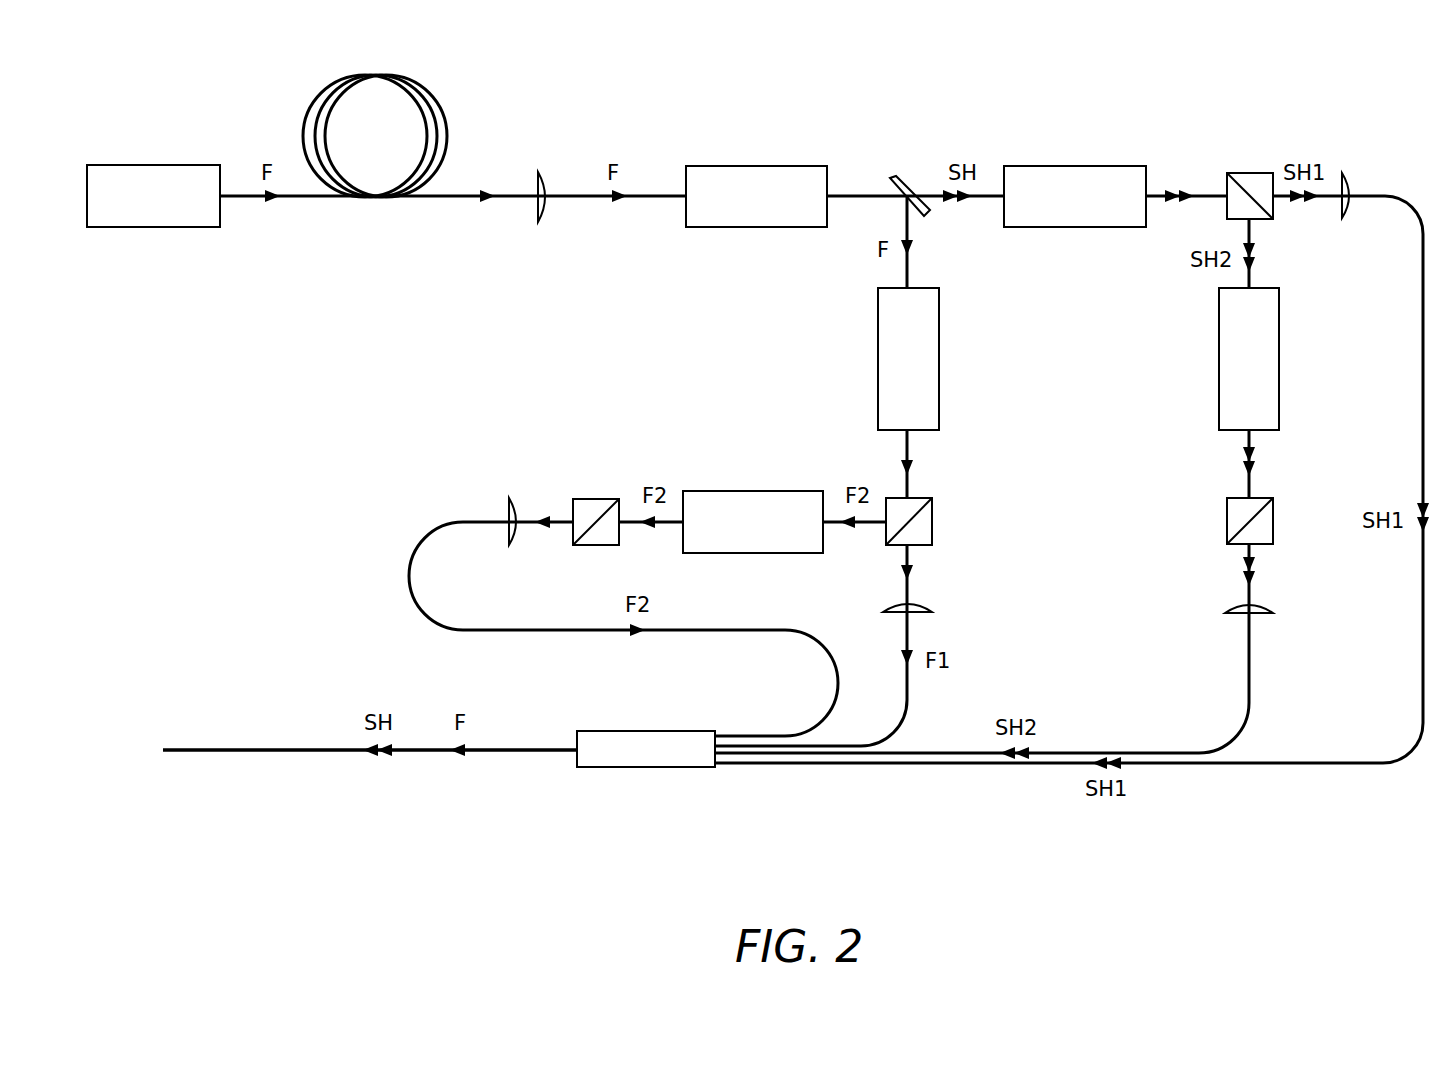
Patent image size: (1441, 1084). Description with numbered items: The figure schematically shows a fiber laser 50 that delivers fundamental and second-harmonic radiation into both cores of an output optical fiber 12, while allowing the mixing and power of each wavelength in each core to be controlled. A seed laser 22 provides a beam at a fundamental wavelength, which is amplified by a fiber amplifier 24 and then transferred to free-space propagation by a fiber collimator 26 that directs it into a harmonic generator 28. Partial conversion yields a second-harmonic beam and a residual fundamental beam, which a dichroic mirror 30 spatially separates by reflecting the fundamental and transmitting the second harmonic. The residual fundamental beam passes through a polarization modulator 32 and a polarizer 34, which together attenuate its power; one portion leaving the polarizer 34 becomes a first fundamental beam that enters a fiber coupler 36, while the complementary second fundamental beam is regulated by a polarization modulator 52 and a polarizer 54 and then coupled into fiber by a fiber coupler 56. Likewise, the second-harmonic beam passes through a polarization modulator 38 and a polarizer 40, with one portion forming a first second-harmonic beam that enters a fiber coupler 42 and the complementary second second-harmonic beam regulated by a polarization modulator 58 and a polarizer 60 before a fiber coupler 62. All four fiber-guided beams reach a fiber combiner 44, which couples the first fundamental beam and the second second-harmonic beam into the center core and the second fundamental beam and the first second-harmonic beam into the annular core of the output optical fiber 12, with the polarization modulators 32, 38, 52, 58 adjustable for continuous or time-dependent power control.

The output optical fiber 12 is at (287, 758).
The seed laser 22 is at (119, 165).
The fiber amplifier 24 is at (437, 100).
The fiber collimator 26 is at (540, 174).
The harmonic generator 28 is at (700, 168).
The dichroic mirror 30 is at (894, 172).
The polarization modulator 32 is at (938, 316).
The polarizer 34 is at (934, 531).
The fiber coupler 36 is at (935, 610).
The polarization modulator 38 is at (1128, 170).
The polarizer 40 is at (1259, 175).
The fiber coupler 42 is at (1343, 172).
The fiber combiner 44 is at (681, 760).
The fiber laser 50 is at (210, 532).
The polarization modulator 52 is at (710, 490).
The polarizer 54 is at (590, 500).
The fiber coupler 56 is at (510, 498).
The polarization modulator 58 is at (1220, 412).
The polarizer 60 is at (1228, 510).
The fiber coupler 62 is at (1221, 612).